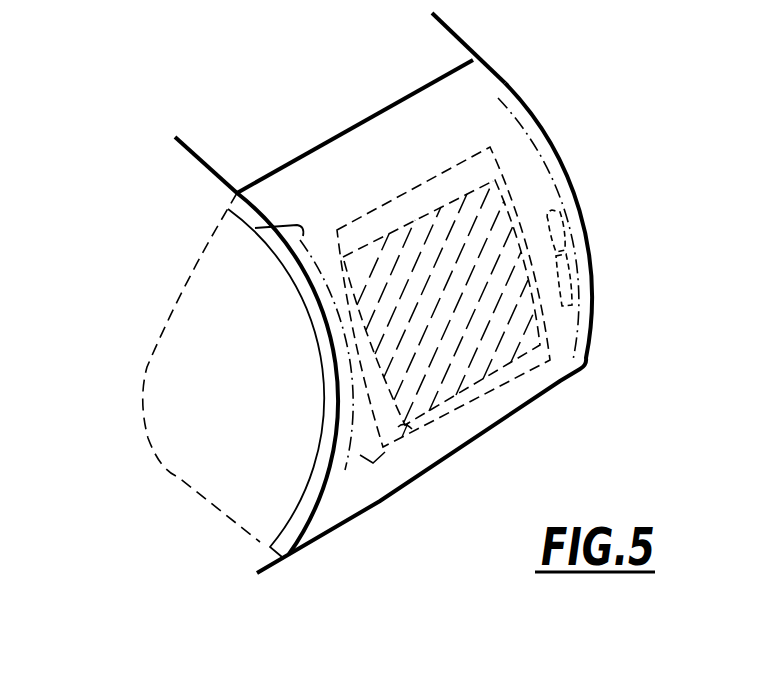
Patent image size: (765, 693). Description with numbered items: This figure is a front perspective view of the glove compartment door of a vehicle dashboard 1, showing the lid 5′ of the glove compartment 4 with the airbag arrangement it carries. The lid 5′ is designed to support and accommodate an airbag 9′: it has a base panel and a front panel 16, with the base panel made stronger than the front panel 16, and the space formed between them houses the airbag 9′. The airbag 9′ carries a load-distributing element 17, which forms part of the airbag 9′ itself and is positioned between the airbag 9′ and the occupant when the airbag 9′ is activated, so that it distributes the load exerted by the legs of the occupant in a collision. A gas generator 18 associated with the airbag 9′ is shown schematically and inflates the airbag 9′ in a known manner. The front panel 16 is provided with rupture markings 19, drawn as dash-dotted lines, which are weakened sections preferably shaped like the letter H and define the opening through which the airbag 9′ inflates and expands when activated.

The dashboard 1 is at (433, 58).
The glove compartment 4 is at (196, 464).
The lid 5′ is at (487, 95).
The airbag 9′ is at (382, 507).
The front panel 16 is at (297, 225).
The load-distributing element 17 is at (409, 433).
The gas generator 18 is at (552, 218).
The rupture markings 19 is at (577, 277).